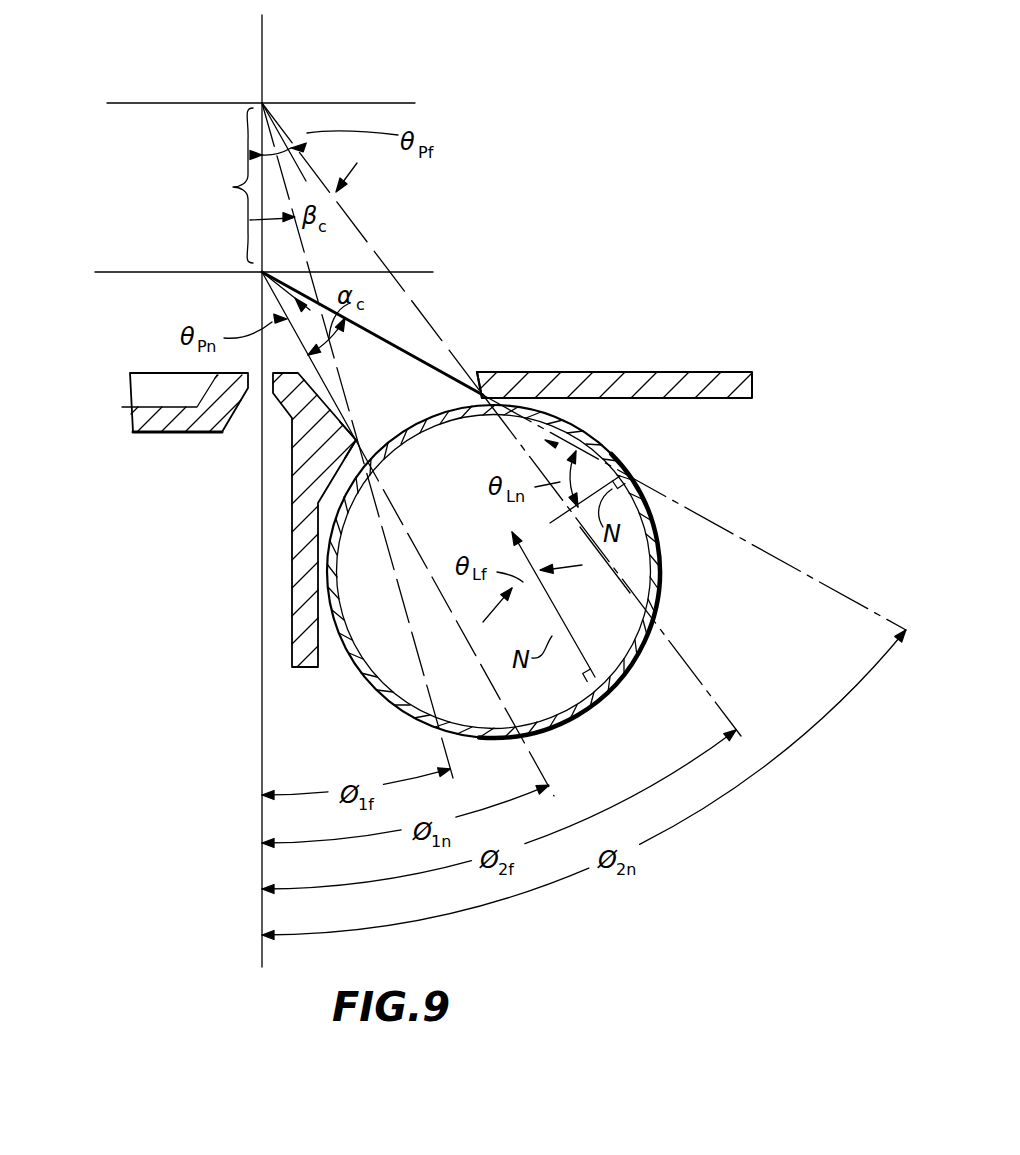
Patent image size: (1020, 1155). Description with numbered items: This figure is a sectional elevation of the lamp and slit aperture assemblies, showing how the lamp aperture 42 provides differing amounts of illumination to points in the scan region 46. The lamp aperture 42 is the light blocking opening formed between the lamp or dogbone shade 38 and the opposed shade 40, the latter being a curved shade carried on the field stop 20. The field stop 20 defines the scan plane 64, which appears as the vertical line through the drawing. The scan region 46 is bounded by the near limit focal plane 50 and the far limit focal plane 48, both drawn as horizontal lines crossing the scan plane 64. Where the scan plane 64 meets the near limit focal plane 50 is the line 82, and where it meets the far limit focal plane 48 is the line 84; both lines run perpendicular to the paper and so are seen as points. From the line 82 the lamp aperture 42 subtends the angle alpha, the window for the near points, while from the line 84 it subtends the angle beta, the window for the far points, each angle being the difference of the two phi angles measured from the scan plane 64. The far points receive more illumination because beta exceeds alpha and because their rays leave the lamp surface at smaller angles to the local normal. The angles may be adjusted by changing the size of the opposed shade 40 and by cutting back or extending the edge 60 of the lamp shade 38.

The field stop 20 is at (118, 408).
The lamp shade 38 is at (630, 372).
The opposed shade 40 is at (368, 452).
The lamp aperture 42 is at (366, 436).
The scan region 46 is at (223, 185).
The far limit focal plane 48 is at (371, 103).
The near limit focal plane 50 is at (415, 271).
The edge of lamp shade 60 is at (478, 372).
The scan plane 64 is at (263, 41).
The line at intersection of scan plane and near limit focal plane 82 is at (258, 275).
The line at intersection of scan plane and far limit focal plane 84 is at (262, 103).